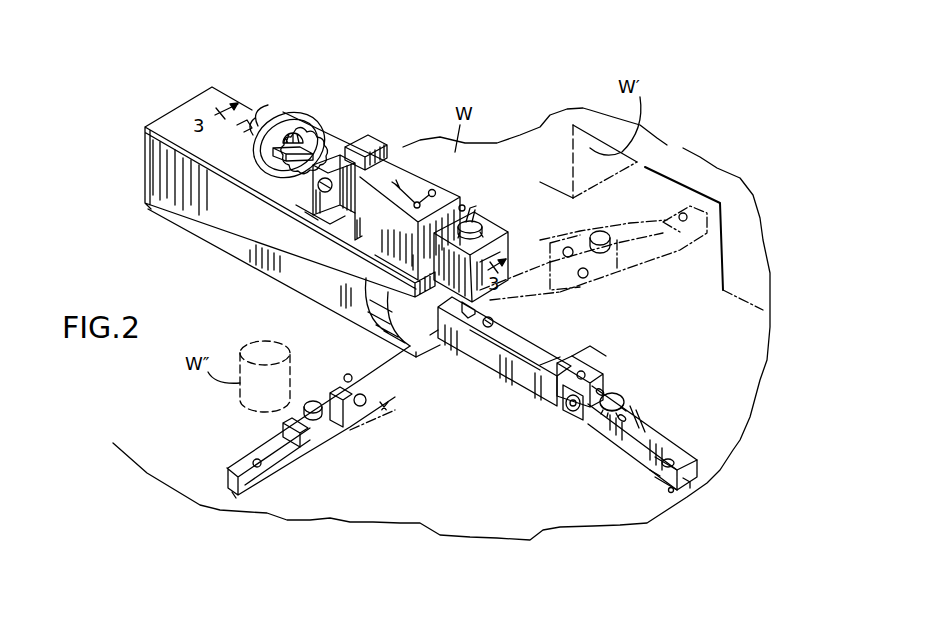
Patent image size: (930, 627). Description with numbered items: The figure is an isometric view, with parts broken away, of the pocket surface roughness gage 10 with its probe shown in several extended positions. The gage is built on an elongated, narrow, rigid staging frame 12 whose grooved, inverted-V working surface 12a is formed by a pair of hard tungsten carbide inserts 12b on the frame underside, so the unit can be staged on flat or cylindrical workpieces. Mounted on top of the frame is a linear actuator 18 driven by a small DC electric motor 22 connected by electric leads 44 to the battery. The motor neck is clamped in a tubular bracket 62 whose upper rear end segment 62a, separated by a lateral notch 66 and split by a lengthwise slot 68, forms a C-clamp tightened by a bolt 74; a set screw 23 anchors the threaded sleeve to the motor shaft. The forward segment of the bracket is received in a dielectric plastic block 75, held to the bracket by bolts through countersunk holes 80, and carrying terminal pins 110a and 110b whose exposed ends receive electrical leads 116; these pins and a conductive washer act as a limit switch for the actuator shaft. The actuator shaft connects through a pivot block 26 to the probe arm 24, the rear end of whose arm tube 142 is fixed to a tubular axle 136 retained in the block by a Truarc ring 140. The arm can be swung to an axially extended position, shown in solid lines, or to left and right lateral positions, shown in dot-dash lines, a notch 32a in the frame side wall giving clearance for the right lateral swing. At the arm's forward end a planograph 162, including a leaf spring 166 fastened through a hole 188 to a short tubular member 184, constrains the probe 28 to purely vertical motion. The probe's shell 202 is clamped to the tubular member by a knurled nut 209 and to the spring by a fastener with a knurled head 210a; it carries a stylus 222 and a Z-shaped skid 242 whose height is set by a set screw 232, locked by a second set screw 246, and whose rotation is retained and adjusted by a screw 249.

The pocket surface roughness gage 10 is at (223, 71).
The staging frame 12 is at (170, 212).
The working surface 12a is at (433, 348).
The inserts 12b is at (214, 244).
The linear actuator 18 is at (398, 148).
The DC electric motor 22 is at (311, 127).
The set screw 23 is at (258, 153).
The probe arm 24 is at (385, 407).
The pivot block 26 is at (508, 247).
The probe 28 is at (302, 465).
The notch 32a is at (348, 322).
The electric leads 44 is at (256, 125).
The tubular bracket 62 is at (327, 243).
The bracket upper rear end segment 62a is at (312, 201).
The lateral notch 66 is at (320, 221).
The lengthwise slot 68 is at (364, 140).
The bolt 74 is at (318, 186).
The dielectric plastic block 75 is at (350, 247).
The countersunk lengthwise holes 80 is at (473, 214).
The terminal pin 110a is at (403, 214).
The terminal pin 110b is at (437, 192).
The electrical leads 116 is at (400, 186).
The tubular axle 136 is at (493, 309).
The Truarc ring 140 is at (496, 233).
The arm tube 142 is at (482, 358).
The planograph 162 is at (576, 348).
The leaf spring 166 is at (556, 360).
The tubular member 184 is at (594, 373).
The hole 188 is at (588, 369).
The shell 202 is at (627, 455).
The knurled nut 209 is at (577, 406).
The knurled head 210a is at (621, 398).
The stylus 222 is at (660, 490).
The set screw 232 is at (677, 450).
The skid 242 is at (669, 493).
The set screw 246 is at (693, 480).
The screw 249 is at (680, 458).